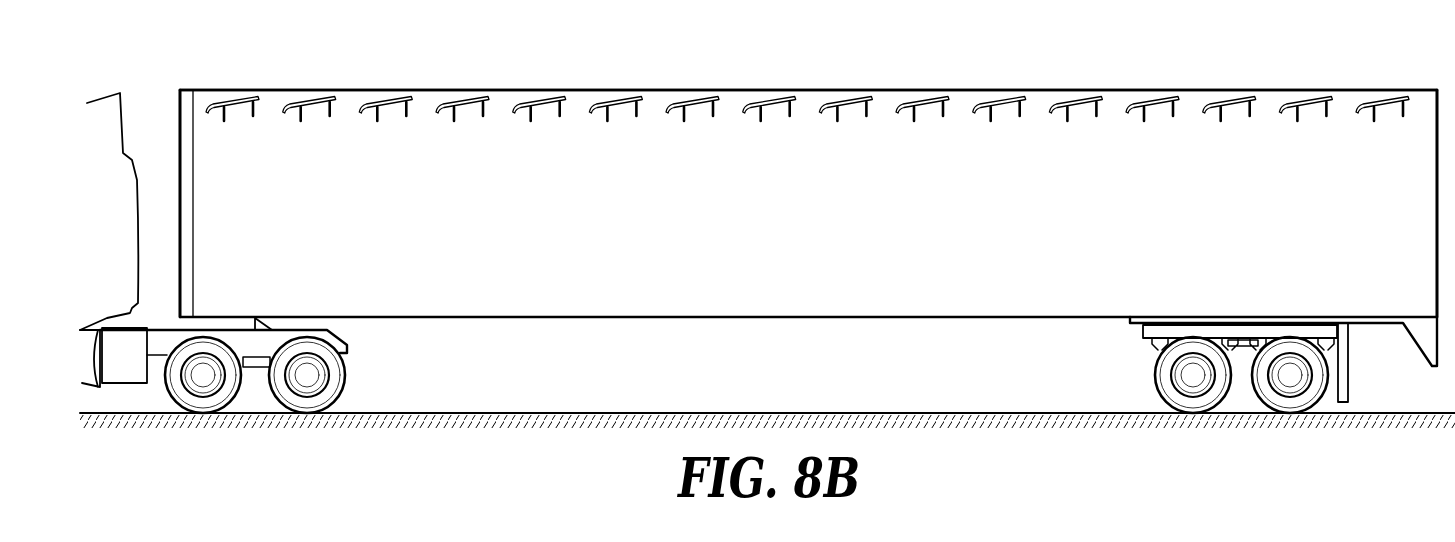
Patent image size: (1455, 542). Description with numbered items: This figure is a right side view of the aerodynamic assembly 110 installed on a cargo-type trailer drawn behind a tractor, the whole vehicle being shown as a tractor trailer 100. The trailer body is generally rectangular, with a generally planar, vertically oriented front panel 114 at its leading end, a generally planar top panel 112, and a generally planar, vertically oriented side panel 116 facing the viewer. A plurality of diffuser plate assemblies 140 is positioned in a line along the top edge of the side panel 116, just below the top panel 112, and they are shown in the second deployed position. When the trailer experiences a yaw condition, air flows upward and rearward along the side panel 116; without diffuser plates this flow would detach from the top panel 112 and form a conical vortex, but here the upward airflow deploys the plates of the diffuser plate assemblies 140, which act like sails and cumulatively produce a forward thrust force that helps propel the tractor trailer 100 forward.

The vehicle / tractor 100 is at (102, 108).
The aerodynamic assembly 110 is at (334, 54).
The top panel 112 is at (552, 90).
The front panel 114 is at (180, 217).
The side panel 116 is at (1192, 104).
The diffuser plate assembly 140 is at (230, 99).